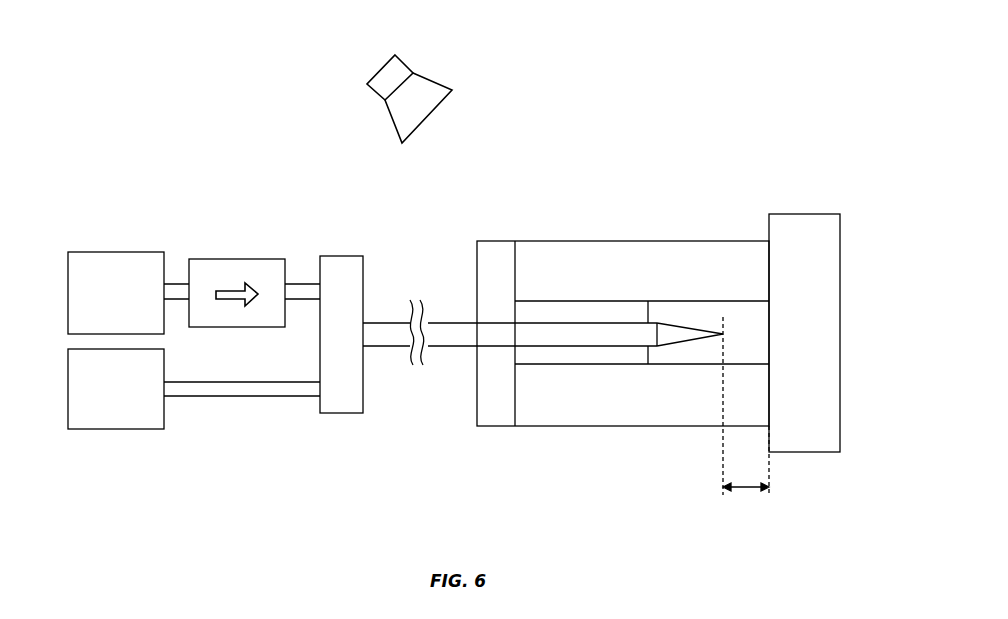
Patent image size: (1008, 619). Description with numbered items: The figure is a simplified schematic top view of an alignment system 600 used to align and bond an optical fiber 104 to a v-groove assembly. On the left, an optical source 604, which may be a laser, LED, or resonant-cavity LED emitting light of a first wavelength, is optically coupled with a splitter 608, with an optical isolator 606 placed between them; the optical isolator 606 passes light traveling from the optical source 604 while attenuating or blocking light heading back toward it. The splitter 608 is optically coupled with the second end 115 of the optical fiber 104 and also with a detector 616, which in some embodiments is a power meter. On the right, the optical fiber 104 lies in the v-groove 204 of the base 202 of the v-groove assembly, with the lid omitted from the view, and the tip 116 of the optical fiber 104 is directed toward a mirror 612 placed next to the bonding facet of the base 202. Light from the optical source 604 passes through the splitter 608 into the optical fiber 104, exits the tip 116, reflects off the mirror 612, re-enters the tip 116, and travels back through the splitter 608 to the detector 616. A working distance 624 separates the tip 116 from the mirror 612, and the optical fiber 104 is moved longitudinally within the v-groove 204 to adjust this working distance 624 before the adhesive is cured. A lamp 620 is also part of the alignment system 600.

The alignment system 600 is at (746, 84).
The optical source 604 is at (146, 252).
The optical isolator 606 is at (238, 259).
The splitter 608 is at (345, 256).
The detector 616 is at (143, 429).
The optical fiber 104 is at (438, 338).
The second end 115 is at (382, 333).
The tip 116 is at (685, 337).
The base 202 is at (528, 240).
The v-groove 204 is at (547, 315).
The mirror 612 is at (808, 452).
The lamp 620 is at (367, 88).
The working distance 624 is at (748, 490).